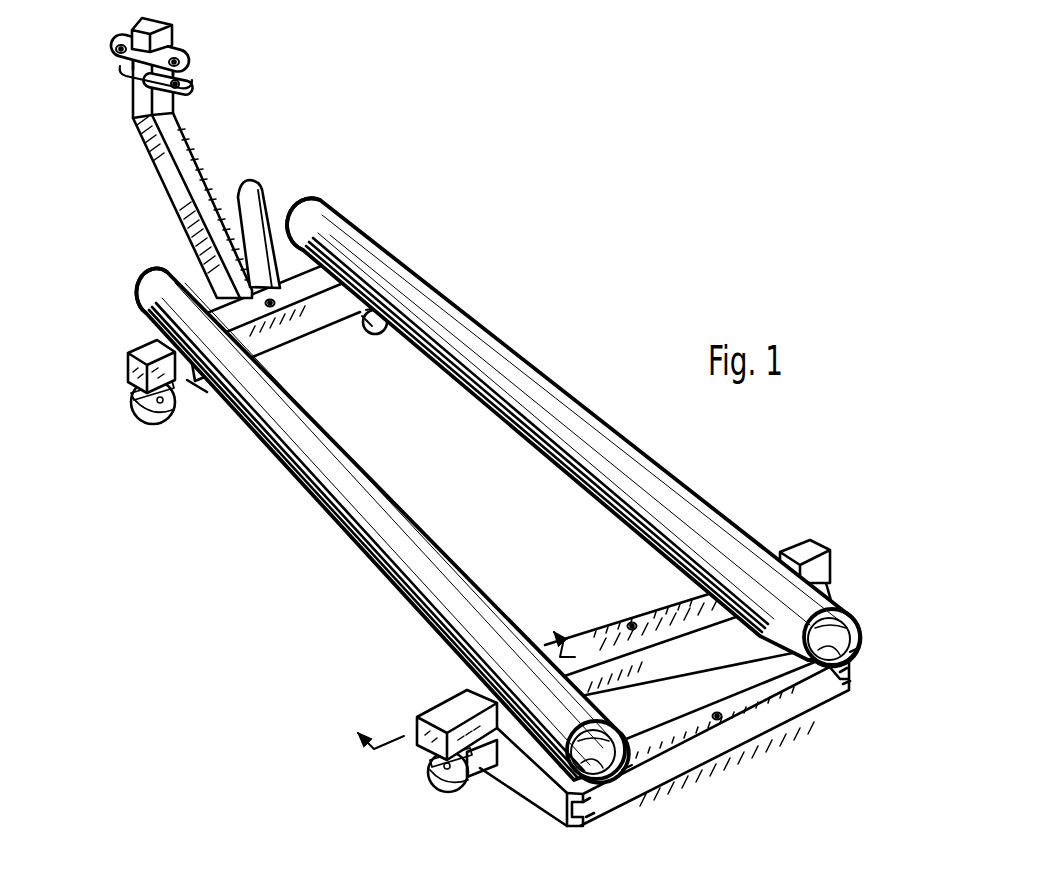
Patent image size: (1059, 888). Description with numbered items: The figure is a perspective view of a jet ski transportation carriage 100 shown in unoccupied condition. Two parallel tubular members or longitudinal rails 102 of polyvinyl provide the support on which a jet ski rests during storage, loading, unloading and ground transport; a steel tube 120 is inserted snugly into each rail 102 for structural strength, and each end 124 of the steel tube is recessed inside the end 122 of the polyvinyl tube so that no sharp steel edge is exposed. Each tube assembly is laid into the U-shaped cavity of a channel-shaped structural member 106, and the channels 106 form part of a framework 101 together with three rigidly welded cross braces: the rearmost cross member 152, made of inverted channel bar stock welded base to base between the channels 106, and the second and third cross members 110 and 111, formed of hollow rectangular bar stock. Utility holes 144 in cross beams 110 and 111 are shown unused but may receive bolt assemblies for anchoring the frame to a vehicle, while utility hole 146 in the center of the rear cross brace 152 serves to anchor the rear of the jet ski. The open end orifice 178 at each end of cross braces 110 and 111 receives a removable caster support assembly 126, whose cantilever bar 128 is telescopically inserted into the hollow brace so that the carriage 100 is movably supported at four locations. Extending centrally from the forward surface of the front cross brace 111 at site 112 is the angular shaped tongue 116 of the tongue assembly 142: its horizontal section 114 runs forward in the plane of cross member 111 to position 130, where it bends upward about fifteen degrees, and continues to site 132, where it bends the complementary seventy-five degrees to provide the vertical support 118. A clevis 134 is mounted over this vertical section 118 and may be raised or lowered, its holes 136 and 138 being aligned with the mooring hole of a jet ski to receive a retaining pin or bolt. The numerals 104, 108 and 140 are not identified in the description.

The carriage 100 is at (517, 330).
The framework 101 is at (536, 568).
The tubular members 102 is at (501, 501).
The front cross member 104 is at (558, 812).
The channel-shaped structural member 106 is at (545, 748).
The corner brackets 108 is at (856, 670).
The second cross member 110 is at (487, 790).
The front cross brace 111 is at (203, 394).
The site 112 is at (256, 212).
The tongue assembly section 114 is at (244, 188).
The angular shaped tongue 116 is at (222, 178).
The vertical support 118 is at (178, 104).
The steel tube 120 is at (612, 728).
The end of polyvinyl tube 122 is at (312, 207).
The end of steel tube 124 is at (856, 684).
The caster support assembly 126 is at (128, 395).
The cantilever bar 128 is at (140, 348).
The position 130 is at (172, 149).
The site 132 is at (174, 118).
The clevis 134 is at (126, 68).
The clevis hole 136 is at (186, 57).
The clevis hole 138 is at (186, 80).
The clevis pin hole 140 is at (114, 50).
The tongue assembly 142 is at (165, 23).
The utility holes 144 is at (280, 306).
The utility hole 146 is at (726, 724).
The rearmost cross member 152 is at (760, 724).
The orifice 178 is at (470, 772).